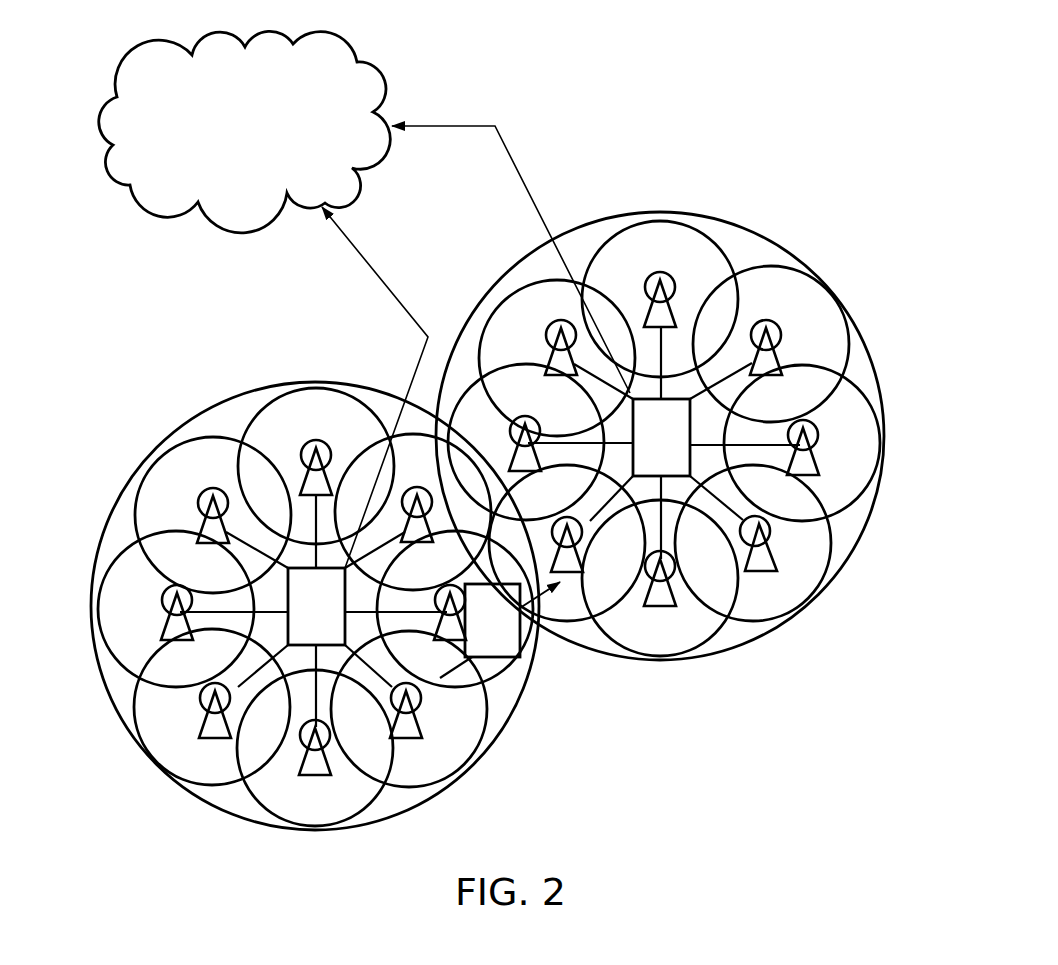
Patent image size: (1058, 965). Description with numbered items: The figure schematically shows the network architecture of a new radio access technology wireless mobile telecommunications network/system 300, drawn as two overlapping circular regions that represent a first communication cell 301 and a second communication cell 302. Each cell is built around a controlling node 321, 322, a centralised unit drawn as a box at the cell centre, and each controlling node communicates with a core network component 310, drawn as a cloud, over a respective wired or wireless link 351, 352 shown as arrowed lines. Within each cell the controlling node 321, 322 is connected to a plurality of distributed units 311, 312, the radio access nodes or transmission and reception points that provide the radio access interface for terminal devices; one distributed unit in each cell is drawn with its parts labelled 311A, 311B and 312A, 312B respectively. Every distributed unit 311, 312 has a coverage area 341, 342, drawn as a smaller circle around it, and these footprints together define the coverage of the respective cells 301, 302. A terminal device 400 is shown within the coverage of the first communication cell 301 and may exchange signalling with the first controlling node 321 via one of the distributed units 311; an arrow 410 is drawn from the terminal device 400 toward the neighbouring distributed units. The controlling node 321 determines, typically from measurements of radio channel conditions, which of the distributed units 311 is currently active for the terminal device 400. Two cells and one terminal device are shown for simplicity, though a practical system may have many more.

The new RAT wireless mobile telecommunications network/system 300 is at (658, 97).
The core network component 310 is at (244, 131).
The first communication cell 301 is at (225, 400).
The second communication cell 302 is at (667, 212).
The distributed units 311 is at (316, 647).
The antenna of base station 311 311A is at (412, 708).
The tower of base station 311 311B is at (408, 727).
The distributed units 312 is at (729, 469).
The antenna of base station 312 312A is at (767, 533).
The tower of base station 312 312B is at (775, 558).
The controlling node 321 is at (316, 606).
The controlling node 322 is at (661, 437).
The coverage area 341 is at (118, 548).
The coverage area 342 is at (768, 262).
The wired or wireless link 351 is at (372, 262).
The wired or wireless link 352 is at (458, 123).
The terminal device 400 is at (493, 662).
The handover direction 410 is at (560, 590).